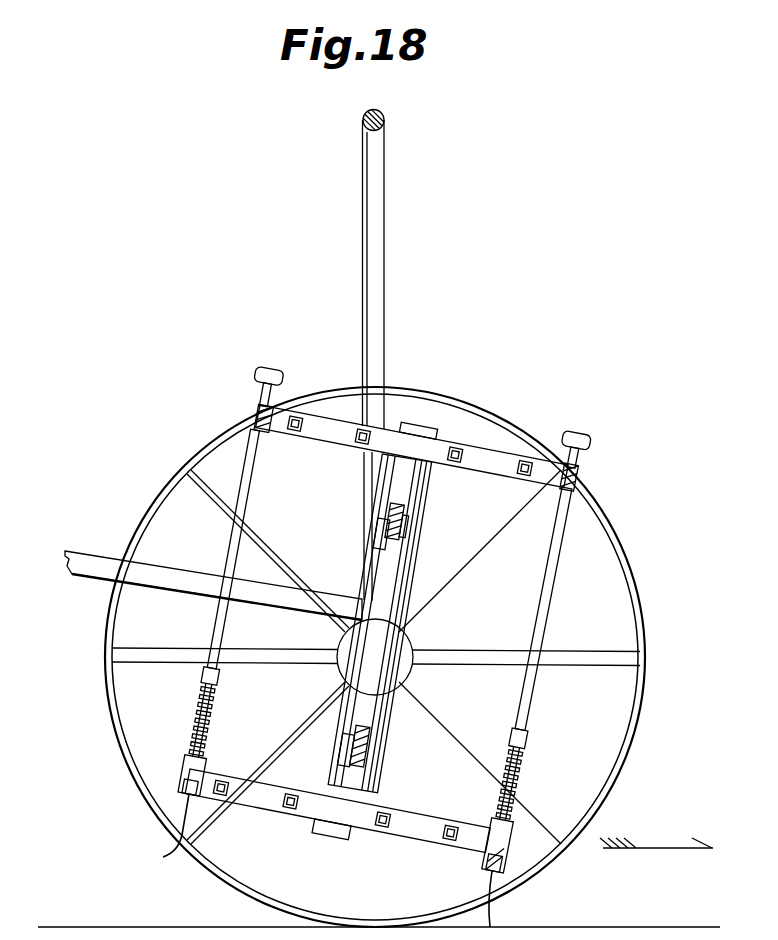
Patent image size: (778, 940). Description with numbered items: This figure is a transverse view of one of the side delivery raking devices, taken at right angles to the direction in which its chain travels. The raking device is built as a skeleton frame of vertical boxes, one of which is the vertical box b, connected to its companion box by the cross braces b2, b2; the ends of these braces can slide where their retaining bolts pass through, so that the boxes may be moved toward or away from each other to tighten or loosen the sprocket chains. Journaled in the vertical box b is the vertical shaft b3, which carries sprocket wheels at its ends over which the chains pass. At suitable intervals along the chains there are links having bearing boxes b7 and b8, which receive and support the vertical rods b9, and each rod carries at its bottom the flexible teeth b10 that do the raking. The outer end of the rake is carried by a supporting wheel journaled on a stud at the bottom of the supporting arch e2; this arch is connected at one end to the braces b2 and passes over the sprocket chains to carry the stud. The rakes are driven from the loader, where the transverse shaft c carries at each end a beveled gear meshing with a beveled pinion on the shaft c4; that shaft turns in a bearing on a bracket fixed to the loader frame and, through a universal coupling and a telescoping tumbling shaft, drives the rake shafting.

The transverse shaft c is at (622, 551).
The shaft c4 is at (155, 573).
The supporting arch e2 is at (385, 266).
The vertical box b is at (388, 628).
The cross braces b2 is at (405, 523).
The vertical shaft b3 is at (228, 619).
The vertical rods b9 is at (537, 612).
The bearing box b7 is at (257, 404).
The bearing box b8 is at (192, 768).
The flexible teeth b10 is at (166, 855).